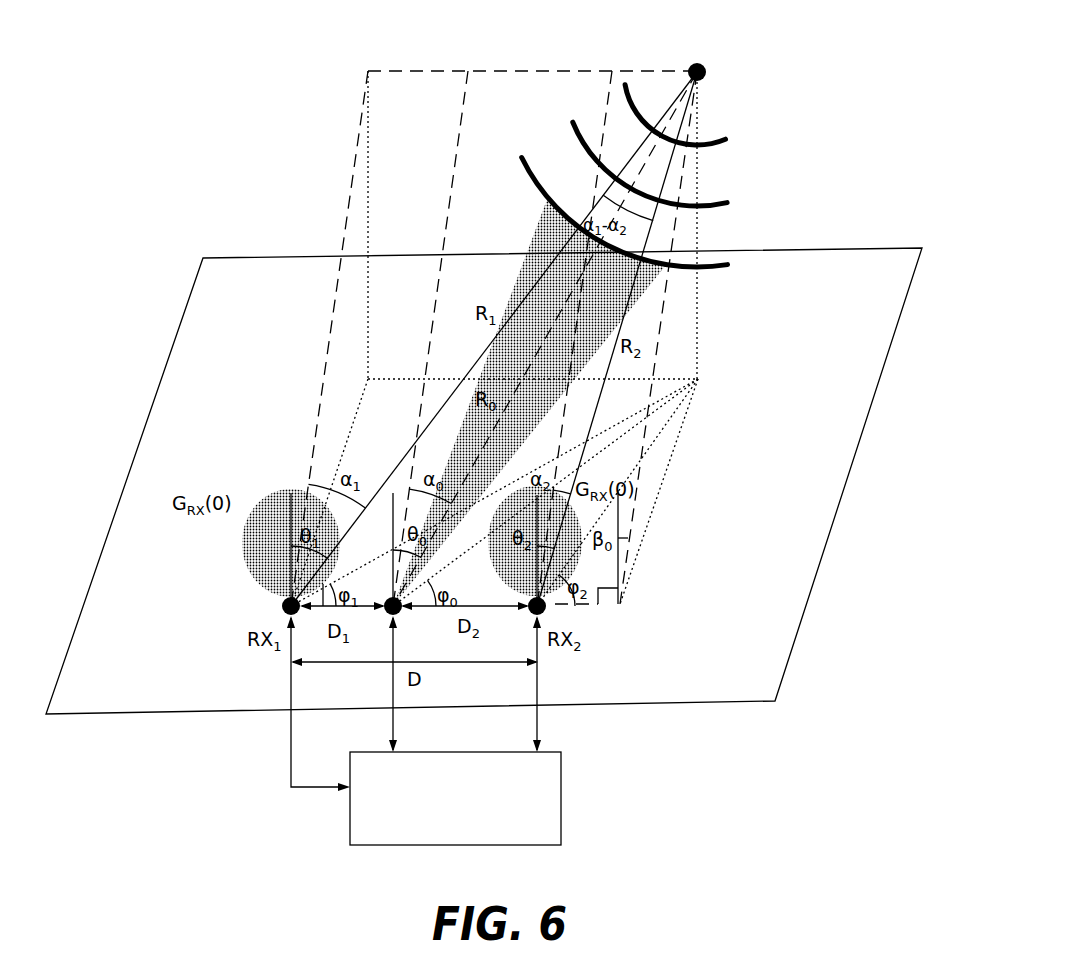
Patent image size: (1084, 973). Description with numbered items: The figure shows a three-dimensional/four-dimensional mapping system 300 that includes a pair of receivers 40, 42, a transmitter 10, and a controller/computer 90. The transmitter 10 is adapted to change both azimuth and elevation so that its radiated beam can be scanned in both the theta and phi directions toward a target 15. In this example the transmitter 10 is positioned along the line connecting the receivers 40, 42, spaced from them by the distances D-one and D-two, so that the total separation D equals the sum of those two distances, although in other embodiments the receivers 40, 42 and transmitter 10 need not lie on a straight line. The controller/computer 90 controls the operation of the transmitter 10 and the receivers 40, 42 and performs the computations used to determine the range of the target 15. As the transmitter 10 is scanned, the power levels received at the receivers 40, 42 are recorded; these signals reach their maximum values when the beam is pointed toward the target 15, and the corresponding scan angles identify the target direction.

The target 15 is at (697, 62).
The 3D/4D mapping system 300 is at (852, 131).
The receiver 40 is at (281, 607).
The receiver 42 is at (546, 610).
The transmitter 10 is at (381, 613).
The controller/computer 90 is at (561, 788).